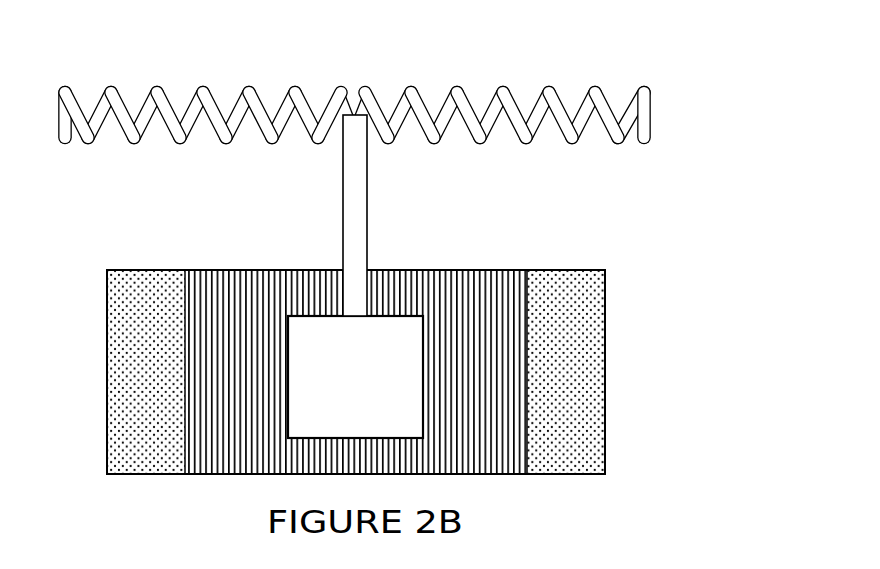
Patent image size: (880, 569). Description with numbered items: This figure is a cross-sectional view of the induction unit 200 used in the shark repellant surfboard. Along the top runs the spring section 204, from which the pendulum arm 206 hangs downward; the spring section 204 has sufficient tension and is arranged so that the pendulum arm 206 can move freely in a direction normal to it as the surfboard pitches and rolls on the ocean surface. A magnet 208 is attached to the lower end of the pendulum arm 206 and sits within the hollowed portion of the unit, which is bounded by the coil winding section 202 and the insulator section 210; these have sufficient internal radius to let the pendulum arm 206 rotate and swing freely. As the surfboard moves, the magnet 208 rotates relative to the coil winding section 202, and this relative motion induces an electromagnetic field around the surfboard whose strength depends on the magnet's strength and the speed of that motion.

The induction unit 200 is at (102, 40).
The coil winding section 202 is at (343, 349).
The spring section 204 is at (650, 107).
The pendulum arm 206 is at (367, 178).
The magnet 208 is at (355, 377).
The insulator section 210 is at (580, 291).